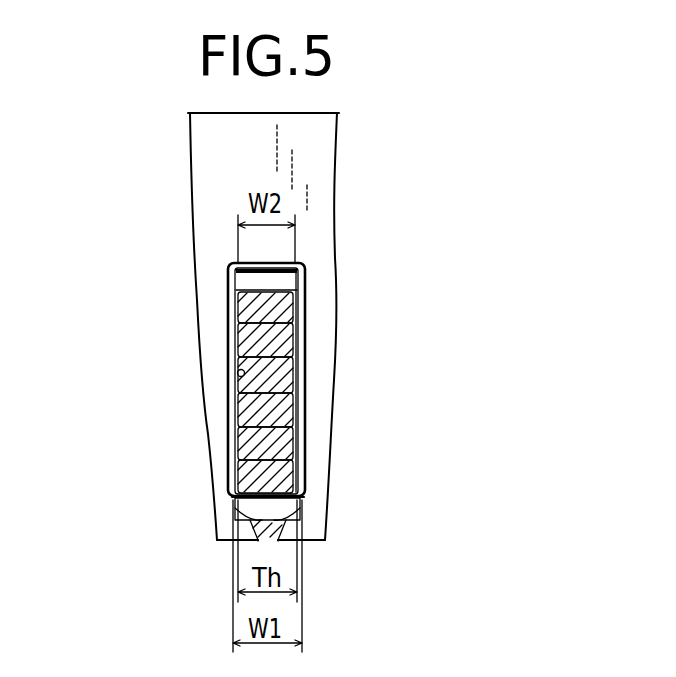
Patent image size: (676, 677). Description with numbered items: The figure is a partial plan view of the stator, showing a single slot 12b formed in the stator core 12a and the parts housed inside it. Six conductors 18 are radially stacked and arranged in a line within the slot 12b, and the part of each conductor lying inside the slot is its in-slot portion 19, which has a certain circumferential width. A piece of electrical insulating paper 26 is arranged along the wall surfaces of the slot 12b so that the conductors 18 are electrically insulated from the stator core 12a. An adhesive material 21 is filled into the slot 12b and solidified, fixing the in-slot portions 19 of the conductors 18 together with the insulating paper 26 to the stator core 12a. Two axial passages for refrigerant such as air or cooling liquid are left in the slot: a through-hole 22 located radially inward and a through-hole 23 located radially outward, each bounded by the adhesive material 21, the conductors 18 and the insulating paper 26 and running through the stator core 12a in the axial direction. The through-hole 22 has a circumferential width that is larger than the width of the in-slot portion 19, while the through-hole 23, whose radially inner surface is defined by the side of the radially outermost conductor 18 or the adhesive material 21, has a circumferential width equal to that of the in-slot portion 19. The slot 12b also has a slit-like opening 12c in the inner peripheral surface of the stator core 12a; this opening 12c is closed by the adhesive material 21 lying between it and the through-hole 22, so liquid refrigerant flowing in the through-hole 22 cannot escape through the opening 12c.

The stator core 12a is at (186, 178).
The slot 12b is at (239, 372).
The opening 12c is at (266, 540).
The conductors 18 is at (337, 392).
The in-slot portion 19 is at (305, 310).
The adhesive material 21 is at (253, 522).
The through-hole 22 is at (303, 514).
The through-hole 23 is at (284, 279).
The electrical insulating paper 26 is at (228, 303).